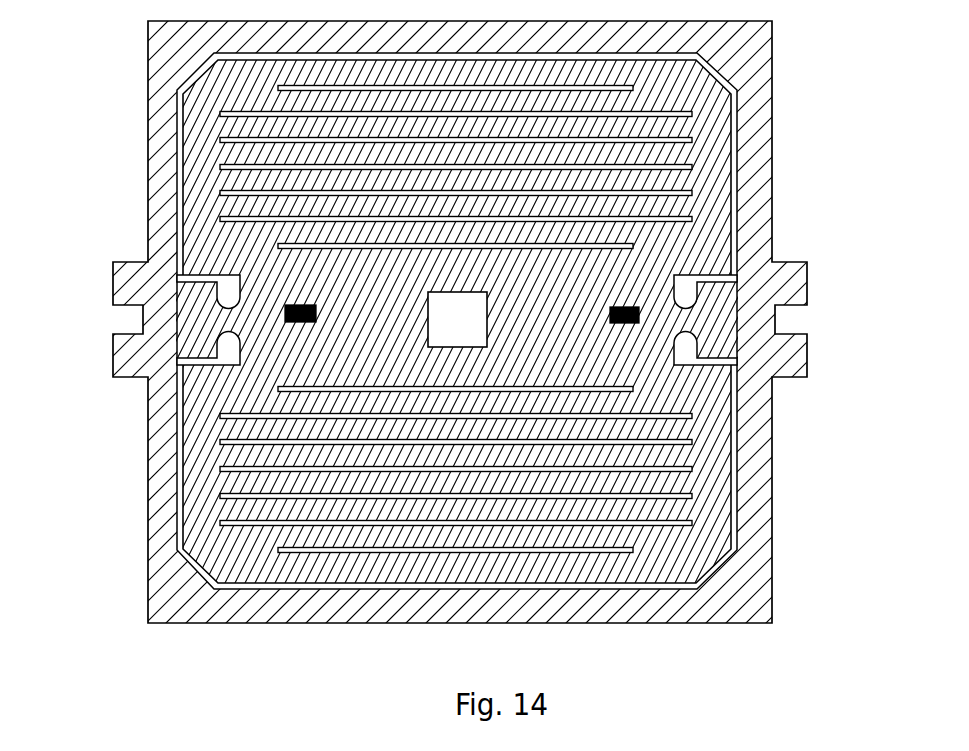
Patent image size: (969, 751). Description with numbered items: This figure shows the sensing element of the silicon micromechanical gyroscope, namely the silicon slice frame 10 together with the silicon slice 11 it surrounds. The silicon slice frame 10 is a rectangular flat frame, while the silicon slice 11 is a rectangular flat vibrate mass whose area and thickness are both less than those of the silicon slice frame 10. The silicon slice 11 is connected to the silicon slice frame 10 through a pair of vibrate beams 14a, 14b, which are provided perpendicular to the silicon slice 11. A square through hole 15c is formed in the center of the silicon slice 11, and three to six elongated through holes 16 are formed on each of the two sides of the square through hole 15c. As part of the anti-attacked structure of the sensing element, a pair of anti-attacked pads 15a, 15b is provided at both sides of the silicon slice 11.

The silicon slice frame 10 is at (162, 200).
The silicon slice 11 is at (203, 150).
The elongated through hole 16 is at (690, 193).
The vibrate beam 14a is at (195, 366).
The vibrate beam 14b is at (700, 352).
The anti-attacked pad 15a is at (285, 323).
The anti-attacked pad 15b is at (639, 323).
The square through hole 15c is at (466, 324).